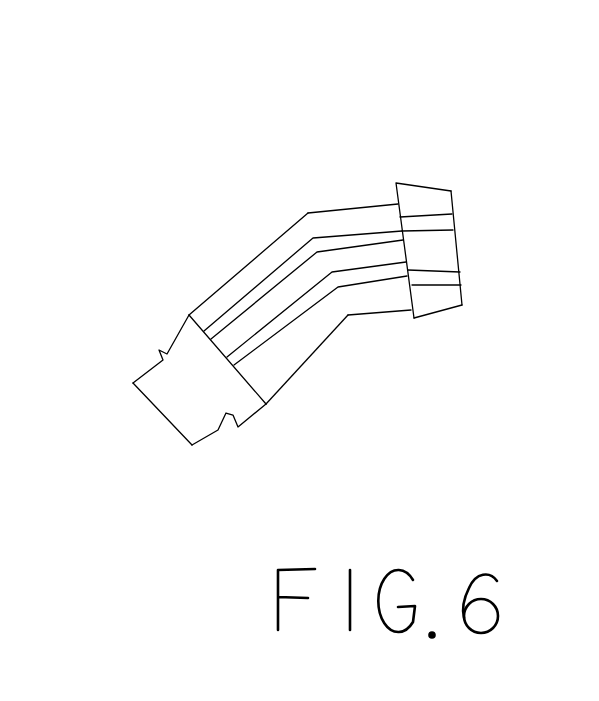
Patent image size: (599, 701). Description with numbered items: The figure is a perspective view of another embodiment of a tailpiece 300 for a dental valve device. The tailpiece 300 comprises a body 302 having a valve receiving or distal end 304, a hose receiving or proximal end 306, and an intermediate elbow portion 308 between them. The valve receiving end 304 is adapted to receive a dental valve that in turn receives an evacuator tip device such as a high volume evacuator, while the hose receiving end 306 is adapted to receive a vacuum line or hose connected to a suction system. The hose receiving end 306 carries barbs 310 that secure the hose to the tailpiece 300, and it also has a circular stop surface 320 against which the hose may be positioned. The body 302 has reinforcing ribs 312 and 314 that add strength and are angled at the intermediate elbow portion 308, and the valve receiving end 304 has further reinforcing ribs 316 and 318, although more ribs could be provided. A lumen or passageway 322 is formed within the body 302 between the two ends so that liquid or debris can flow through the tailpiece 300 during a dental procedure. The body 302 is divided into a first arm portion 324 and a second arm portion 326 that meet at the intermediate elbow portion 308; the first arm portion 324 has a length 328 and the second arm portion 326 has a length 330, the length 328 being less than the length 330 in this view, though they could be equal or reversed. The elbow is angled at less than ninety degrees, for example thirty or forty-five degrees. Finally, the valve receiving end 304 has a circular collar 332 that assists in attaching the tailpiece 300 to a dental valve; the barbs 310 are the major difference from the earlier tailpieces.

The tailpiece 300 is at (340, 95).
The body 302 is at (371, 358).
The valve receiving or distal end 304 is at (487, 225).
The hose receiving or proximal end 306 is at (142, 459).
The intermediate elbow portion 308 is at (294, 196).
The barbs 310 is at (173, 340).
The reinforcing rib 312 is at (243, 303).
The reinforcing rib 314 is at (273, 322).
The reinforcing rib 316 is at (430, 223).
The reinforcing rib 318 is at (432, 277).
The circular stop surface 320 is at (262, 399).
The lumen or passageway 322 is at (131, 416).
The first arm portion 324 is at (381, 222).
The second arm portion 326 is at (275, 256).
The length 328 is at (390, 310).
The length 330 is at (203, 297).
The circular collar 332 is at (462, 305).